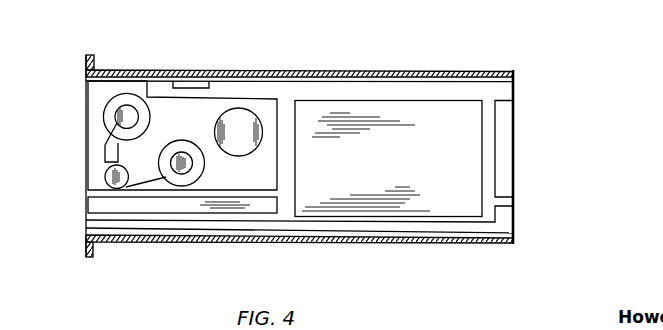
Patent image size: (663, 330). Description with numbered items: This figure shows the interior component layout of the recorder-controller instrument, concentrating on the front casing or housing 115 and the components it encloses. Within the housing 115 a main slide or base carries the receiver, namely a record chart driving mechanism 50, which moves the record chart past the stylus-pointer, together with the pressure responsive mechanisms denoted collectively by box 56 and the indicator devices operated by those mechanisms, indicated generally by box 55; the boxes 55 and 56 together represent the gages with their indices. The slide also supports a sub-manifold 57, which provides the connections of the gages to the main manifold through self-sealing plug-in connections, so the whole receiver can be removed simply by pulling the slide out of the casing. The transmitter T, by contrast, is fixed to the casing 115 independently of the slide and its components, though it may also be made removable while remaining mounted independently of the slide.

The casing or housing 115 is at (255, 70).
The transmitter T is at (87, 228).
The record chart driving mechanism 50 is at (256, 185).
The indicator devices 55 is at (89, 203).
The pressure responsive mechanisms 56 is at (368, 172).
The sub-manifold 57 is at (503, 167).